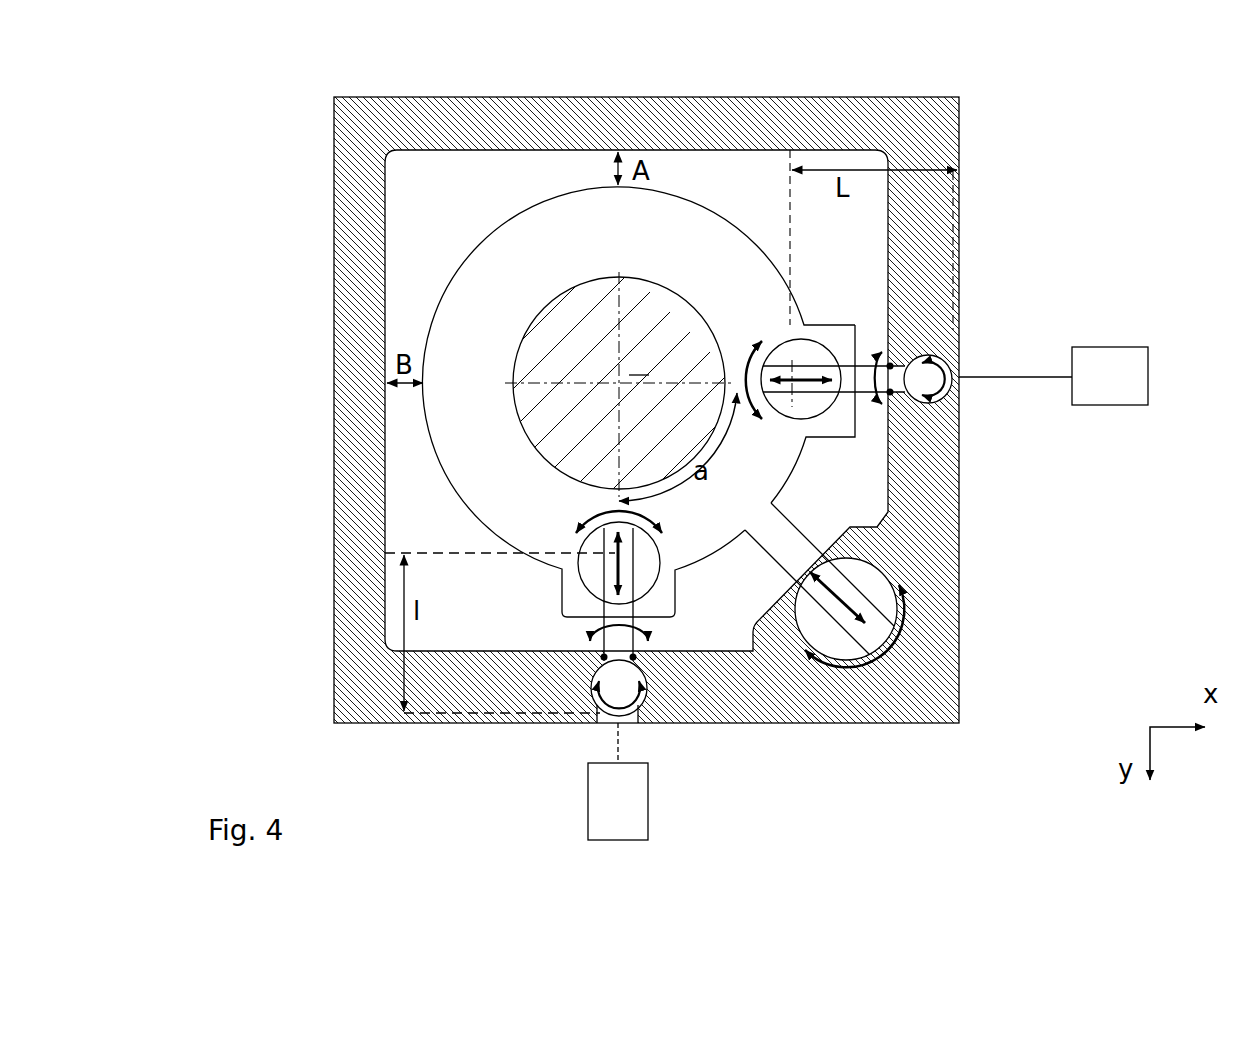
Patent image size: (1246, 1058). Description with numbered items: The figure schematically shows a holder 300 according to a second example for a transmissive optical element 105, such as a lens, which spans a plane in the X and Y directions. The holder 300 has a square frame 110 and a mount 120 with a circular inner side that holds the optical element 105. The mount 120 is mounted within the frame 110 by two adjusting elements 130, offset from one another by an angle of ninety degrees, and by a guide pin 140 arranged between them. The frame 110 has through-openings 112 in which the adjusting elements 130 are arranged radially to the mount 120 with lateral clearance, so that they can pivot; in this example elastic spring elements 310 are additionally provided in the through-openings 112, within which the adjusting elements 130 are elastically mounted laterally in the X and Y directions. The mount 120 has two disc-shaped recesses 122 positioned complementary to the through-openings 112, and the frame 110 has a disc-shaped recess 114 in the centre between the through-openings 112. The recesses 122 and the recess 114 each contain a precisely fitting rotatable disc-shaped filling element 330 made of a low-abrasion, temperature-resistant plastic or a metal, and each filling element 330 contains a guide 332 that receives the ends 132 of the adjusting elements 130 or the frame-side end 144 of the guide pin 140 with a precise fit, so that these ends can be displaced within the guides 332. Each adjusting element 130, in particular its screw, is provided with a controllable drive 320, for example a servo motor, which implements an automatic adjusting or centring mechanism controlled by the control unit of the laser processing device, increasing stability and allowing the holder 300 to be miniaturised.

The transmissive optical element 105 is at (662, 336).
The frame 110 is at (336, 260).
The through-openings 112 is at (968, 367).
The recess 114 is at (900, 606).
The mount 120 is at (425, 435).
The disc-shaped recesses 122 is at (814, 352).
The adjusting elements 130 is at (962, 387).
The ends of the adjusting elements 132 is at (945, 400).
The guide pin 140 is at (900, 583).
The frame-side end of the guide pin 144 is at (837, 620).
The holder 300 is at (920, 752).
The elastic spring elements 310 is at (892, 363).
The controllable drive 320 is at (1112, 347).
The filling element 330 is at (875, 408).
The guide 332 is at (775, 425).